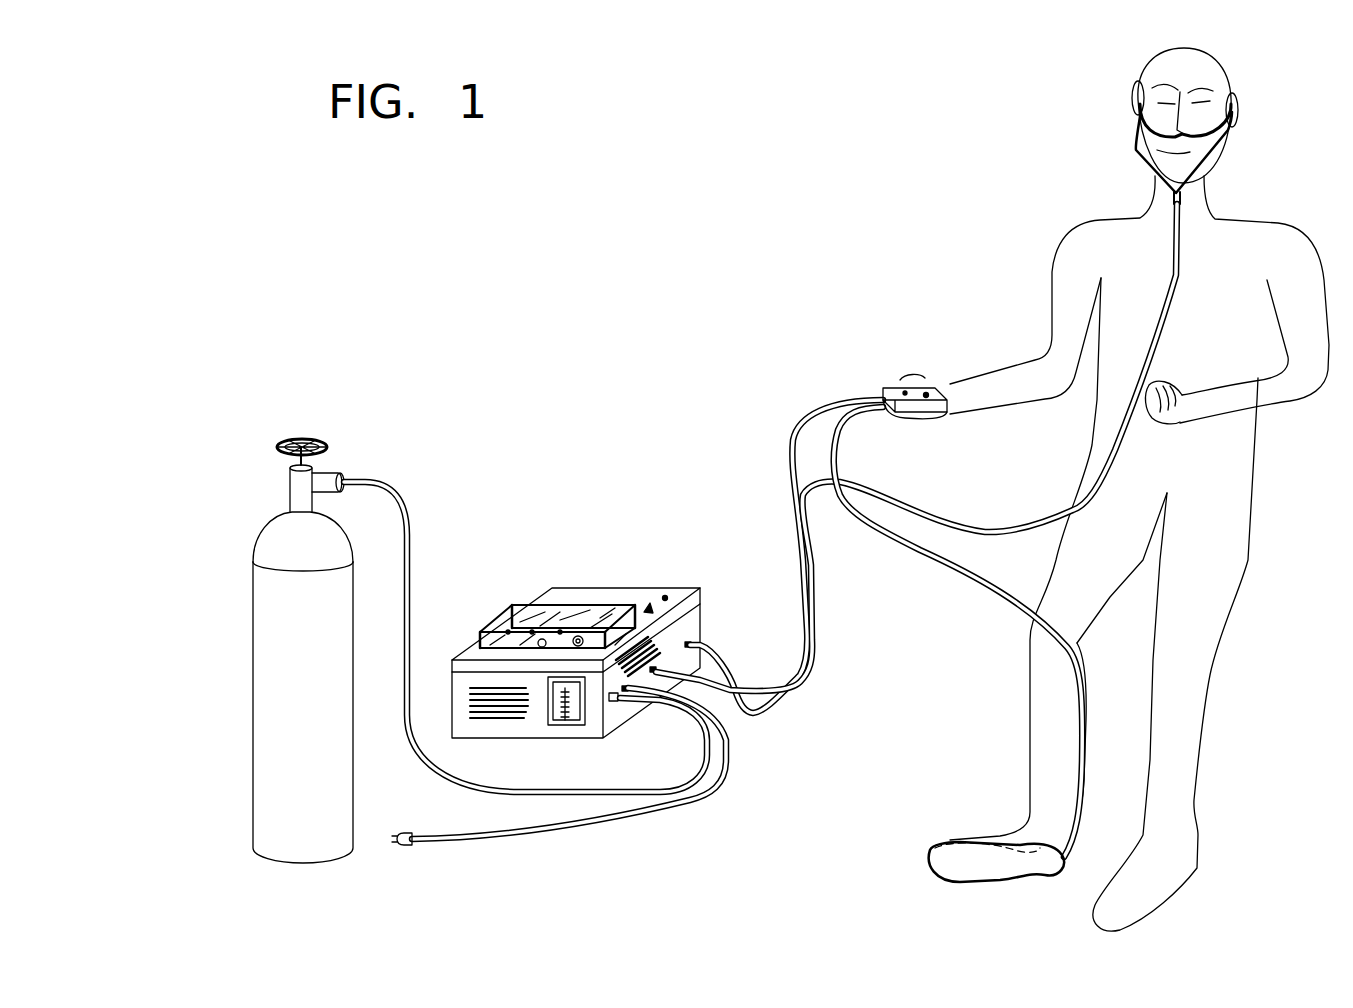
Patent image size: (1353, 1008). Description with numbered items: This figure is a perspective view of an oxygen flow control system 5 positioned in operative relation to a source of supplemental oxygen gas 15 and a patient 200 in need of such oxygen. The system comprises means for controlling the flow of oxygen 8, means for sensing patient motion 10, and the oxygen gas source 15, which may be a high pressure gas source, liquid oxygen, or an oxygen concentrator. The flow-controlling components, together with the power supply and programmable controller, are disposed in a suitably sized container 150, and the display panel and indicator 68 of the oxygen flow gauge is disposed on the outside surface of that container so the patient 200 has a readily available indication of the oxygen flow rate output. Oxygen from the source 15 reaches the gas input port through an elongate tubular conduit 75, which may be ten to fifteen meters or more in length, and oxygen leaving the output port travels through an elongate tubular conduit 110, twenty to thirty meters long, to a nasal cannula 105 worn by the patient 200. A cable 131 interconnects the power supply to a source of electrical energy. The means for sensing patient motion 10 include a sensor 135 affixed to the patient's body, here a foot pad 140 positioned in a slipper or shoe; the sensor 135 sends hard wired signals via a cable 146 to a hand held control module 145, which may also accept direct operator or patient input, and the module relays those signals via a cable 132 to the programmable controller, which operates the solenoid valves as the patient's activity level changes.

The oxygen flow control system 5 is at (609, 635).
The means for controlling the flow of oxygen 8 is at (539, 593).
The means for sensing patient motion 10 is at (962, 852).
The source of supplemental oxygen gas 15 is at (258, 526).
The display panel and indicator 68 is at (570, 722).
The elongate tubular conduit 75 is at (673, 709).
The nasal cannula 105 is at (1215, 90).
The elongate tubular conduit 110 is at (922, 507).
The cable 131 is at (698, 792).
The cable 132 is at (779, 687).
The sensor 135 is at (1010, 848).
The foot pad 140 is at (972, 867).
The hand held control module 145 is at (924, 390).
The cable 146 is at (1088, 691).
The container 150 is at (700, 612).
The patient 200 is at (1139, 489).